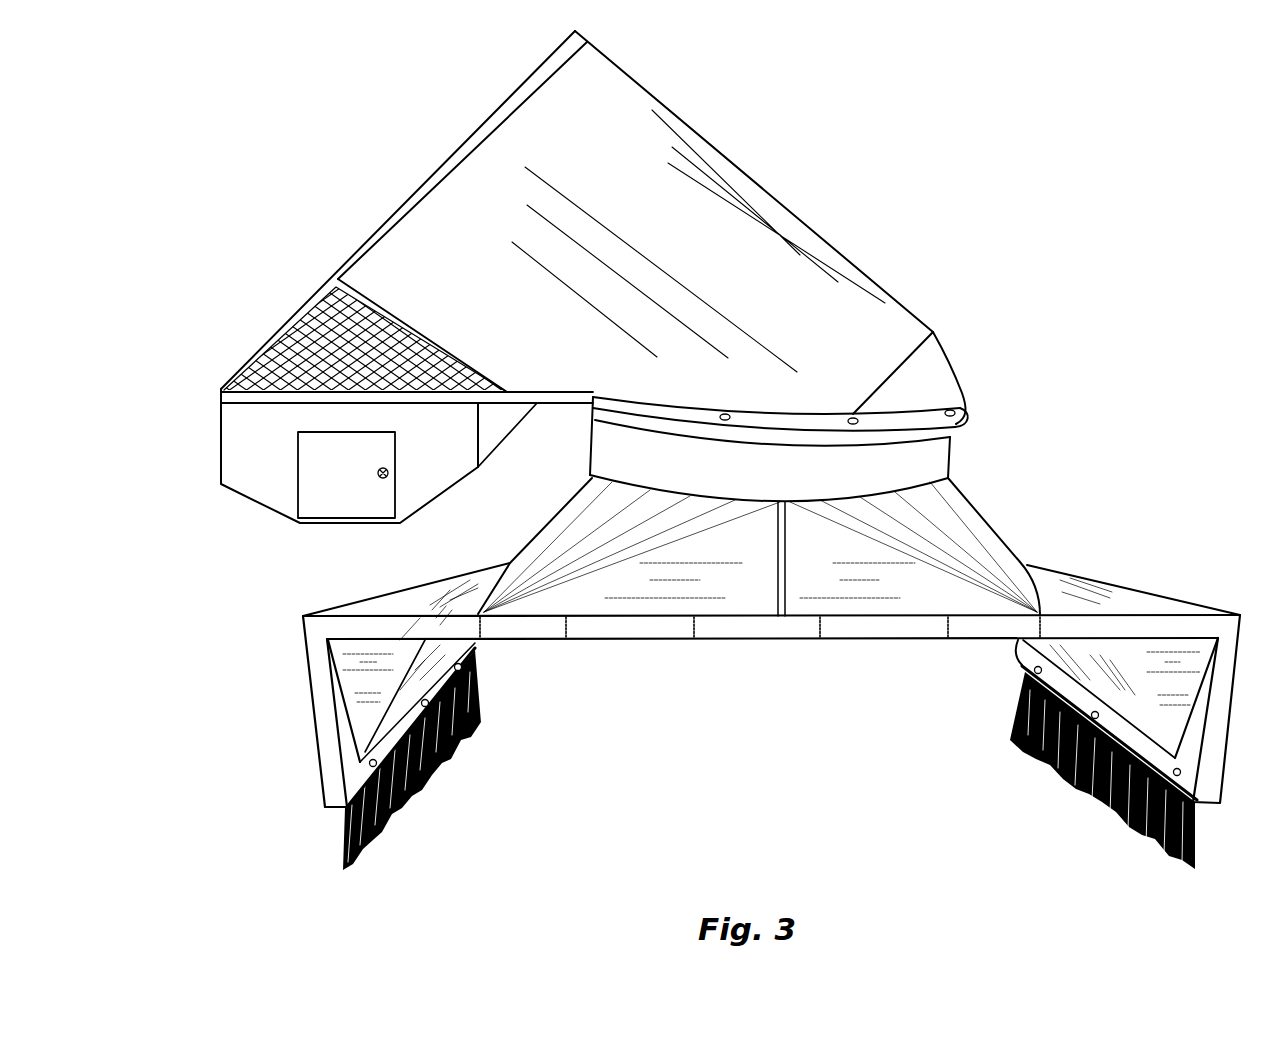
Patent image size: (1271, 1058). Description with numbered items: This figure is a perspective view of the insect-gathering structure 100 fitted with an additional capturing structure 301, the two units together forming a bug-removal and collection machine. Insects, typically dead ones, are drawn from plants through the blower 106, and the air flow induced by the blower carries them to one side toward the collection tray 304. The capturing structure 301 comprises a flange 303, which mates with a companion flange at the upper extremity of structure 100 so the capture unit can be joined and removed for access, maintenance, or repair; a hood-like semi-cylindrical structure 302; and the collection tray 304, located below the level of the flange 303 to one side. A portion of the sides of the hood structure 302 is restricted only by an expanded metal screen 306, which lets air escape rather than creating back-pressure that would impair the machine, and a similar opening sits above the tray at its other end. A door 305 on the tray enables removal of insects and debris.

The insect-gathering structure 100 is at (1068, 497).
The blower 106 is at (850, 390).
The capturing structure 301 is at (607, 227).
The hood-like semi-cylindrical structure 302 is at (625, 97).
The flange 303 is at (962, 398).
The collection tray 304 is at (360, 436).
The door 305 is at (310, 485).
The expanded metal screen 306 is at (304, 340).